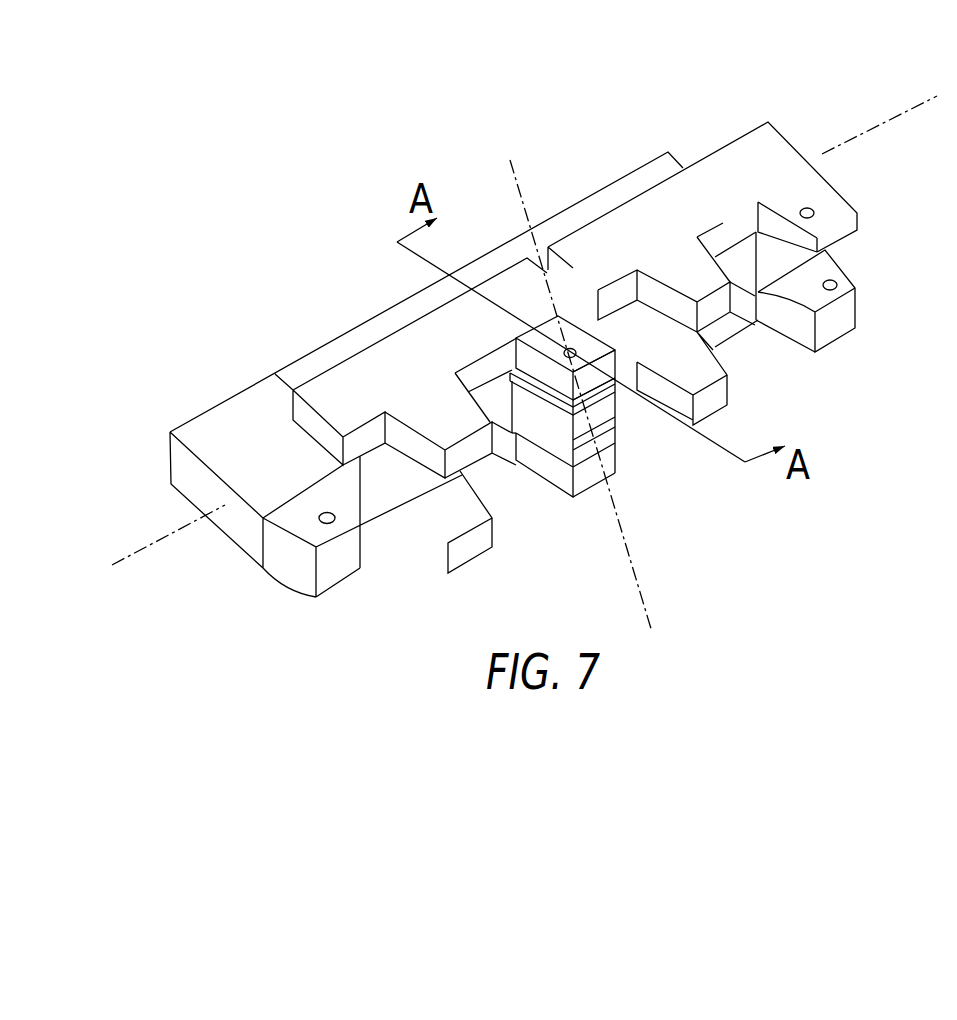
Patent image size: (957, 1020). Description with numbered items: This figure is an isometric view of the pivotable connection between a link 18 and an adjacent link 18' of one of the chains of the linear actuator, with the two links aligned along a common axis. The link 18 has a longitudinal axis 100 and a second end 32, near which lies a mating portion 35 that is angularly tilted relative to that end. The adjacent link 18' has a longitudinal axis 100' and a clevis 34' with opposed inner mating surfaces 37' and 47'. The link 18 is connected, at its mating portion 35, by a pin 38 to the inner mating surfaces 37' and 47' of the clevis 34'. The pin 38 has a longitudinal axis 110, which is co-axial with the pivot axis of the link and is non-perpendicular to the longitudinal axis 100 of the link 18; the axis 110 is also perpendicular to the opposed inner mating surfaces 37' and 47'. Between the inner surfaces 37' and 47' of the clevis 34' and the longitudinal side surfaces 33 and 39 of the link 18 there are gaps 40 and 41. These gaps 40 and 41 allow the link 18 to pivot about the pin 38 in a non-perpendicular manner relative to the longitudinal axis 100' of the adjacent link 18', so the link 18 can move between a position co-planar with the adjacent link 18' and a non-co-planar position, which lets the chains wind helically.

The link 18 is at (702, 253).
The adjacent link 18' is at (426, 374).
The longitudinal axis 100 is at (879, 109).
The longitudinal axis 100' is at (165, 520).
The longitudinal axis 110 is at (515, 162).
The second end 32 is at (548, 447).
The longitudinal side surface 33 is at (547, 418).
The clevis 34' is at (470, 387).
The mating portion 35 is at (527, 393).
The inner mating surface 37' is at (590, 478).
The pin 38 is at (574, 351).
The longitudinal side surface 39 is at (566, 391).
The gap 40 is at (597, 443).
The gap 41 is at (586, 398).
The inner mating surface 47' is at (630, 403).